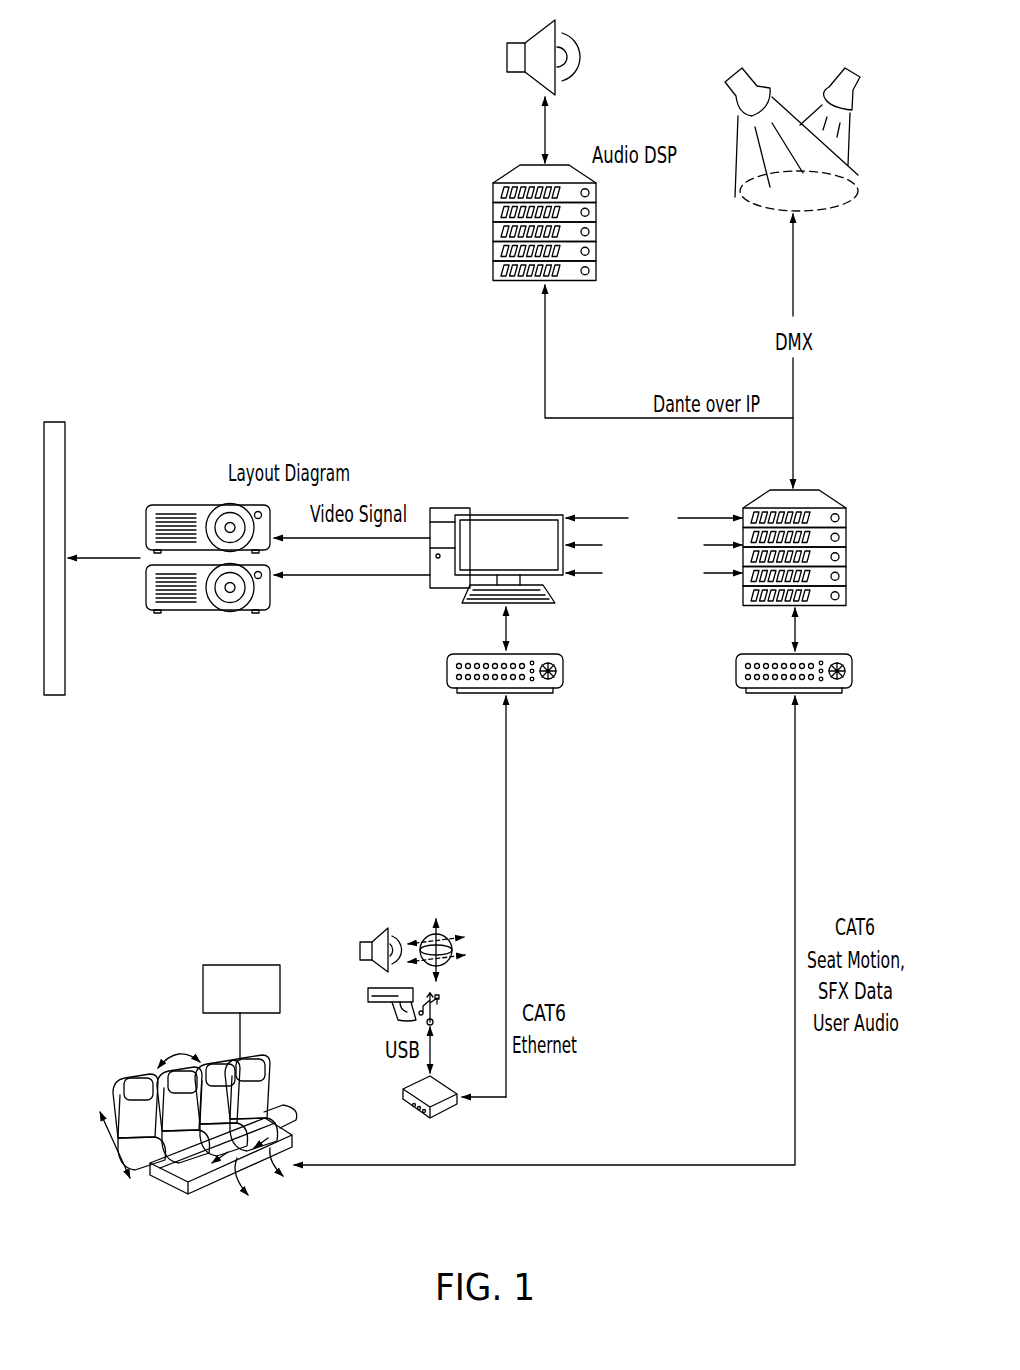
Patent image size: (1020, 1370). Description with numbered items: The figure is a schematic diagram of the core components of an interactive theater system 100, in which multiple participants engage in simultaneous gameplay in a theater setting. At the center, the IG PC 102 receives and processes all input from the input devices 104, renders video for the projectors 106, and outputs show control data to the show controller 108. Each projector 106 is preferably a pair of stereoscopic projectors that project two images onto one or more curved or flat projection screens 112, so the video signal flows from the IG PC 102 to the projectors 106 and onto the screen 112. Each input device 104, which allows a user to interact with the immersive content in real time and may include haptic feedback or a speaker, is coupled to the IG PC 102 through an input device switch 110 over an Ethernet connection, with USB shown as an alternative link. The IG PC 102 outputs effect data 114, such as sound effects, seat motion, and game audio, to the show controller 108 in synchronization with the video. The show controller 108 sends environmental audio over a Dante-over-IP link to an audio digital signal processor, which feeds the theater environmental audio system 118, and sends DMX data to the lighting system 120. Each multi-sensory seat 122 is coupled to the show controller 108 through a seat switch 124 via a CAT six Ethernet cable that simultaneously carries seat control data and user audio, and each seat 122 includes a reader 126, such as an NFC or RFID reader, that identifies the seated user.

The interactive theater system 100 is at (158, 203).
The IG PC 102 is at (553, 512).
The input device 104 is at (367, 994).
The projector 106 is at (163, 503).
The show controller 108 is at (840, 501).
The input device switch 110 is at (537, 695).
The projection screen 112 is at (57, 420).
The effect data 114 is at (592, 577).
The theater environmental audio system 118 is at (506, 57).
The lighting system 120 is at (855, 68).
The multi-sensory seat 122 is at (133, 1076).
The seat switch 124 is at (826, 695).
The reader 126 is at (240, 962).